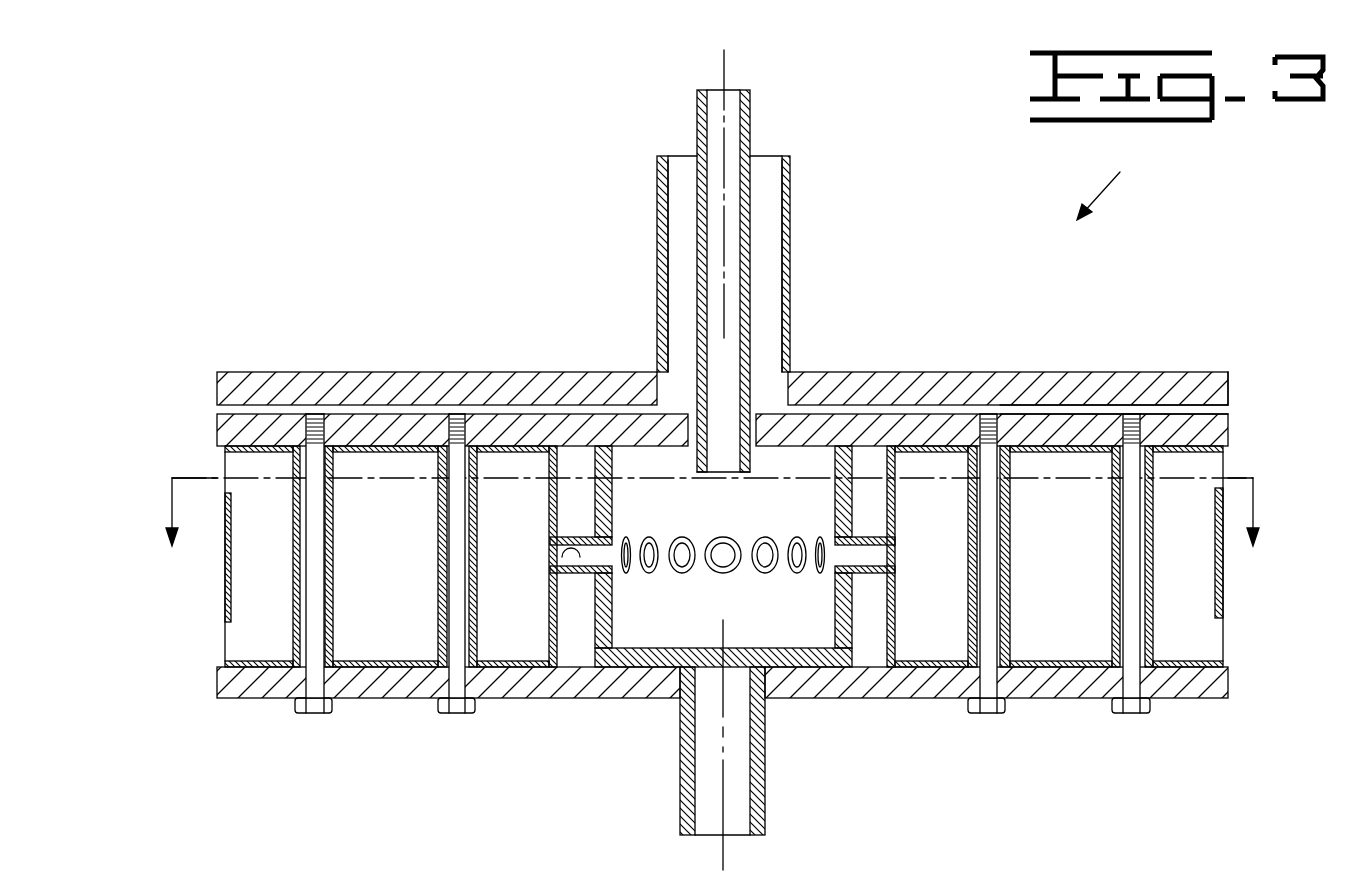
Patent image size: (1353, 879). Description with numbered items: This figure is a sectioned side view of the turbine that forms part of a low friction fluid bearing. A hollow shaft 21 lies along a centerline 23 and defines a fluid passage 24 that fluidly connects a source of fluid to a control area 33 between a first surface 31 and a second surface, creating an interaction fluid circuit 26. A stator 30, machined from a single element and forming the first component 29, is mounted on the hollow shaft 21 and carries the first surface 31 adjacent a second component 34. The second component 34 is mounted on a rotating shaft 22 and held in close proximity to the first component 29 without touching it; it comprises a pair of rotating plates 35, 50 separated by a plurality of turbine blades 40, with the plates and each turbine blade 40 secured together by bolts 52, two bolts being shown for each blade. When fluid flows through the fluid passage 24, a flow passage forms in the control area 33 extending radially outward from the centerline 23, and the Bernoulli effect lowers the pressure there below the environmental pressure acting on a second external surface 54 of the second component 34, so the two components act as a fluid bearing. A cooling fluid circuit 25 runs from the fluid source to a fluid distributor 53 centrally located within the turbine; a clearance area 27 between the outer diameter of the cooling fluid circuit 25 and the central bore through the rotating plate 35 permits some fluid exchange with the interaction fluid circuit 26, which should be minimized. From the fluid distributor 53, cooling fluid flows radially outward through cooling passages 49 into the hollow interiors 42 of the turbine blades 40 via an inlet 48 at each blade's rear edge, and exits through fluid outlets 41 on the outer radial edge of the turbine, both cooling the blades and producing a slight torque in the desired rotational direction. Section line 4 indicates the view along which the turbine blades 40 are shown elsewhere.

The section line 4- 4 is at (716, 513).
The hollow shaft 21 is at (790, 180).
The rotating shaft 22 is at (765, 760).
The centerline 23 is at (724, 76).
The fluid passage 24 is at (776, 290).
The cooling fluid circuit 25 is at (752, 120).
The interaction fluid circuit 26 is at (675, 300).
The clearance area 27 is at (752, 418).
The first component 29 is at (1228, 375).
The stator 30 is at (995, 372).
The first surface 31 is at (1085, 405).
The control area 33 is at (337, 408).
The second component 34 is at (348, 702).
The rotating plate 35 is at (1228, 425).
The turbine blade 40 is at (880, 633).
The fluid outlet 41 is at (1220, 467).
The hollow interior 42 is at (387, 633).
The inlet 48 is at (557, 537).
The cooling passage 49 is at (722, 503).
The rotating plate 50 is at (1228, 688).
The bolt 52 is at (1118, 712).
The fluid distributor 53 is at (590, 645).
The second external surface 54 is at (510, 697).